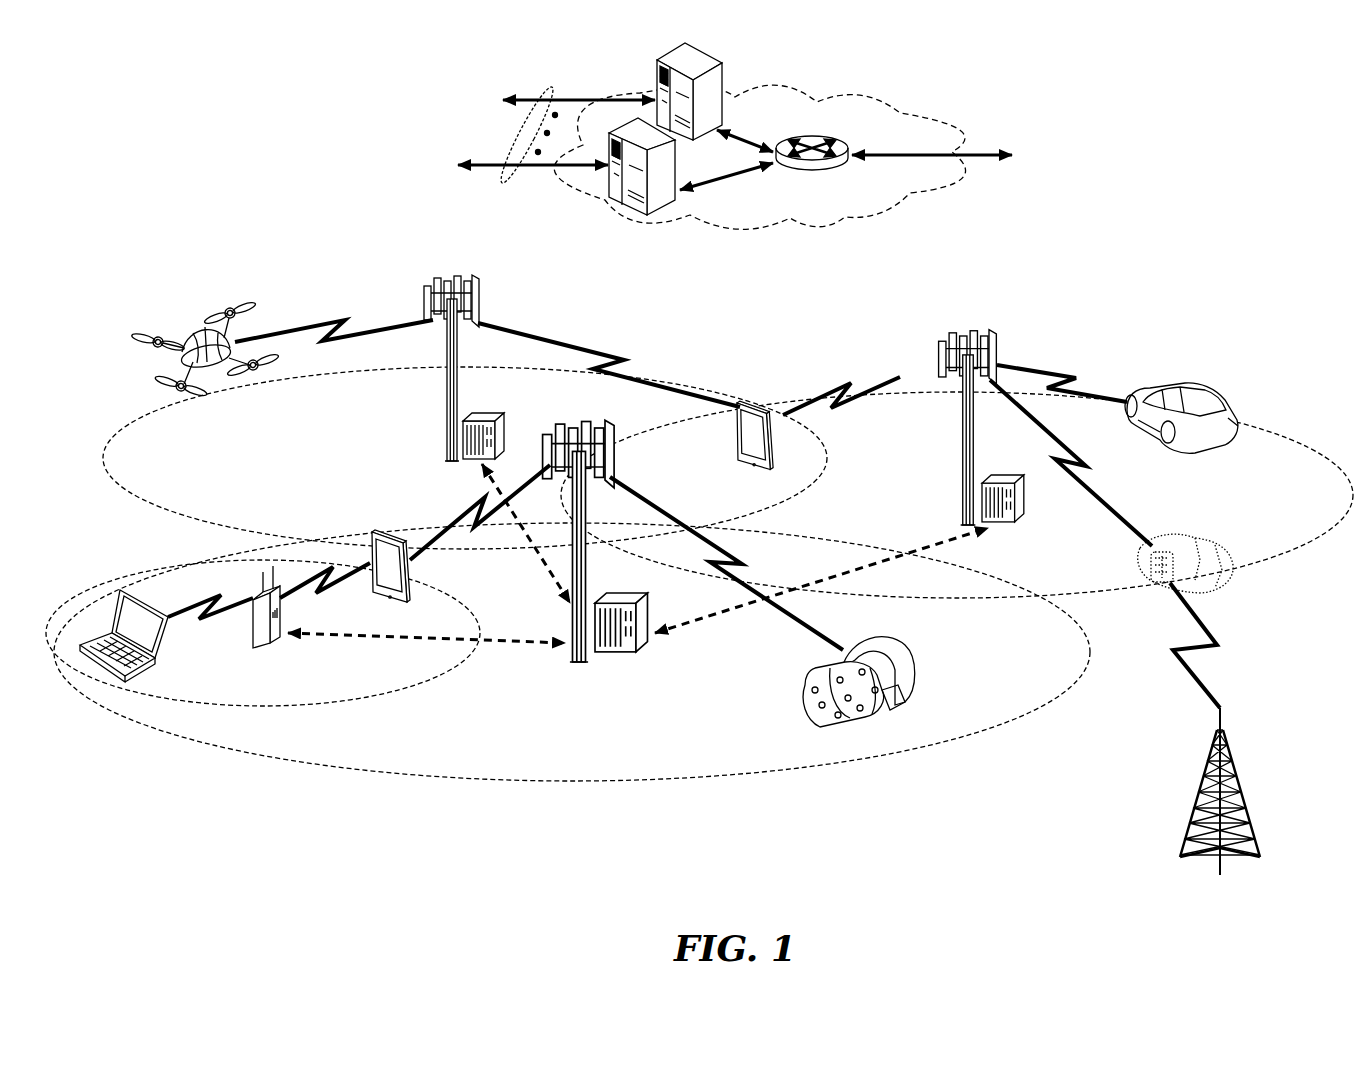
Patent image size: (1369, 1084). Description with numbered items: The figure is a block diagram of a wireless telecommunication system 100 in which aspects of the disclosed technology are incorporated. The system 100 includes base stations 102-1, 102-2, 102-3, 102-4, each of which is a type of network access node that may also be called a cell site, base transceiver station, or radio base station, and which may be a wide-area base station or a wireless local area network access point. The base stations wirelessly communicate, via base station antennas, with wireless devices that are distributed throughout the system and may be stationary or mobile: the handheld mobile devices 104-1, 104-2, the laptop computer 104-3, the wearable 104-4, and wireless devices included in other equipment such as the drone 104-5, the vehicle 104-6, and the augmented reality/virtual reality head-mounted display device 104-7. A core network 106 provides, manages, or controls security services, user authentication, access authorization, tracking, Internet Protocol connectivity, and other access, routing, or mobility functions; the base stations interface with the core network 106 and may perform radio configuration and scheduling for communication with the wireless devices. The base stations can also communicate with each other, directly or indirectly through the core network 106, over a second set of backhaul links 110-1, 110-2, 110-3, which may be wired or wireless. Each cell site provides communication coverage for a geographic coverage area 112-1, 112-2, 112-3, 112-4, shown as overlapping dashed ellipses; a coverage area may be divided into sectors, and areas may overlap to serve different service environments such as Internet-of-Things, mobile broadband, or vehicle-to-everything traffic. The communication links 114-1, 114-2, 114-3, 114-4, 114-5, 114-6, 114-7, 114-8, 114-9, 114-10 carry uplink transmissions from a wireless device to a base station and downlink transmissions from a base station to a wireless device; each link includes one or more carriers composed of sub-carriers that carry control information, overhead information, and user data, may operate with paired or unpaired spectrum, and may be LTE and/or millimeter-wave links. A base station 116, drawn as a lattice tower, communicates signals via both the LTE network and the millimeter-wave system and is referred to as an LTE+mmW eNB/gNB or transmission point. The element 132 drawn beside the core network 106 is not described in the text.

The wireless telecommunication system 100 is at (1252, 148).
The base station 102-1 is at (583, 657).
The base station 102-2 is at (443, 407).
The base station 102-3 is at (960, 440).
The base station 102-4 is at (253, 635).
The wireless device 104-1 is at (407, 575).
The wireless device 104-2 is at (737, 440).
The wireless device 104-3 is at (100, 675).
The wireless device 104-4 is at (1165, 540).
The wireless device 104-5 is at (215, 373).
The wireless device 104-6 is at (1200, 398).
The wireless device 104-7 is at (915, 668).
The core network 106 is at (843, 221).
The backhaul link 110-1 is at (322, 637).
The backhaul link 110-2 is at (883, 560).
The backhaul link 110-3 is at (542, 560).
The geographic coverage area 112-1 is at (508, 782).
The geographic coverage area 112-2 is at (387, 692).
The geographic coverage area 112-3 is at (167, 512).
The geographic coverage area 112-4 is at (1263, 438).
The communication link 114-1 is at (740, 565).
The communication link 114-2 is at (465, 512).
The communication link 114-3 is at (180, 615).
The communication link 114-4 is at (325, 580).
The communication link 114-5 is at (333, 327).
The communication link 114-6 is at (610, 363).
The communication link 114-7 is at (860, 380).
The communication link 114-8 is at (1087, 483).
The communication link 114-9 is at (1052, 373).
The communication link 114-10 is at (1205, 650).
The base station 116 is at (1233, 778).
The antenna array 132 is at (520, 185).